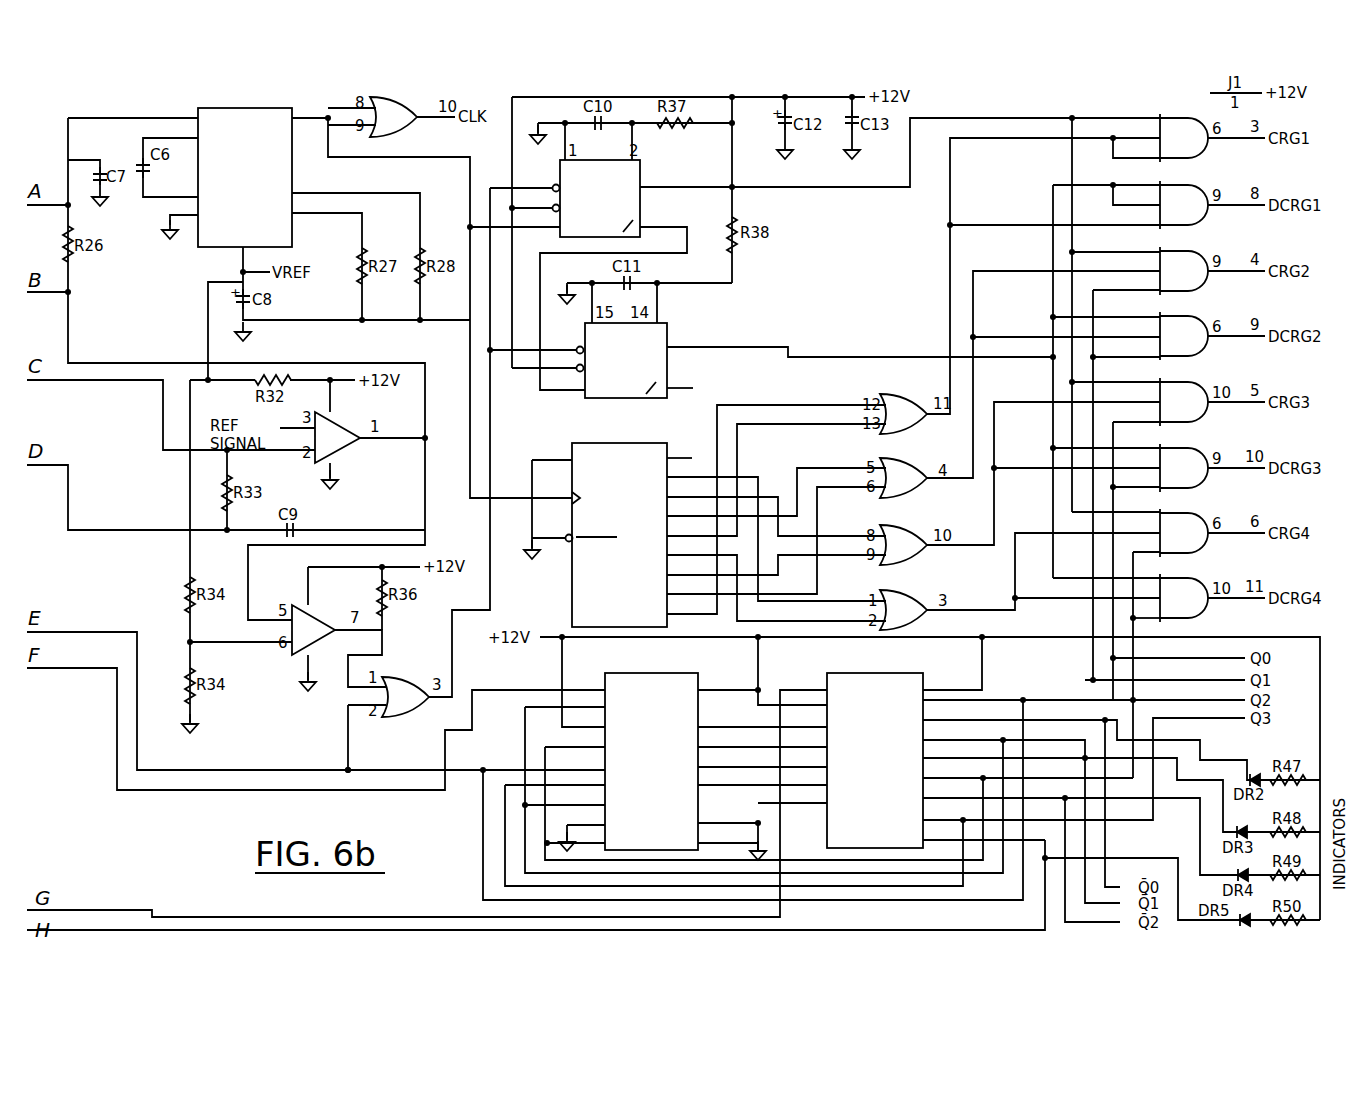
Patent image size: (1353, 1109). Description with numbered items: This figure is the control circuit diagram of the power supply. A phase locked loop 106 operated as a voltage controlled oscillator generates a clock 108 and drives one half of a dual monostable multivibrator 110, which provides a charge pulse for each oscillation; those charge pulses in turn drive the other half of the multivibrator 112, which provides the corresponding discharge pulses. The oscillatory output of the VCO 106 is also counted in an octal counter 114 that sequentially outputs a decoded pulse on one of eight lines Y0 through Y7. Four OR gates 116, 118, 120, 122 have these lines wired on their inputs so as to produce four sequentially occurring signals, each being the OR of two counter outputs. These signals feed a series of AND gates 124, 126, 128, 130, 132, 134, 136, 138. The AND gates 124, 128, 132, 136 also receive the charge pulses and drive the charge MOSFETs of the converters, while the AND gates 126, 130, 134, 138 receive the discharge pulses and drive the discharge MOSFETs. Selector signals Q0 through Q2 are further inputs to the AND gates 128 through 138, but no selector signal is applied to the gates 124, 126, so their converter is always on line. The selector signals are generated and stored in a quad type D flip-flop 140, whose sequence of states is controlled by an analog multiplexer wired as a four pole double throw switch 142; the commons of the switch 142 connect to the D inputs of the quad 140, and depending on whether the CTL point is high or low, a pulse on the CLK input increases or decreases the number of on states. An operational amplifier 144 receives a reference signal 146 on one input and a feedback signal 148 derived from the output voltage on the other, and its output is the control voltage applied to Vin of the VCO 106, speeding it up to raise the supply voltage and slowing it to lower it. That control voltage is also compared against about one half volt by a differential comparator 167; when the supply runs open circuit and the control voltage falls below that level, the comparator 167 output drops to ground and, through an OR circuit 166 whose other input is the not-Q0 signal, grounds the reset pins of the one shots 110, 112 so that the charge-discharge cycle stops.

The phase locked loop 106 is at (198, 247).
The clock 108 is at (378, 137).
The monostable multivibrator half 110 is at (640, 196).
The monostable multivibrator half 112 is at (667, 323).
The octal counter/driver 114 is at (572, 605).
The OR gate 116 is at (882, 395).
The OR gate 118 is at (923, 472).
The OR gate 120 is at (924, 530).
The OR gate 122 is at (924, 596).
The AND gate 124 is at (1205, 153).
The AND gate 126 is at (1205, 220).
The AND gate 128 is at (1205, 286).
The AND gate 130 is at (1205, 351).
The AND gate 132 is at (1205, 417).
The AND gate 134 is at (1205, 483).
The AND gate 136 is at (1205, 548).
The AND gate 138 is at (1205, 613).
The quad type D flip-flop 140 is at (913, 673).
The four pole double throw switch 142 is at (687, 673).
The operational amplifier 144 is at (348, 448).
The reference signal 146 is at (290, 430).
The feedback signal 148 is at (296, 452).
The OR circuit 166 is at (408, 717).
The differential comparator 167 is at (290, 652).